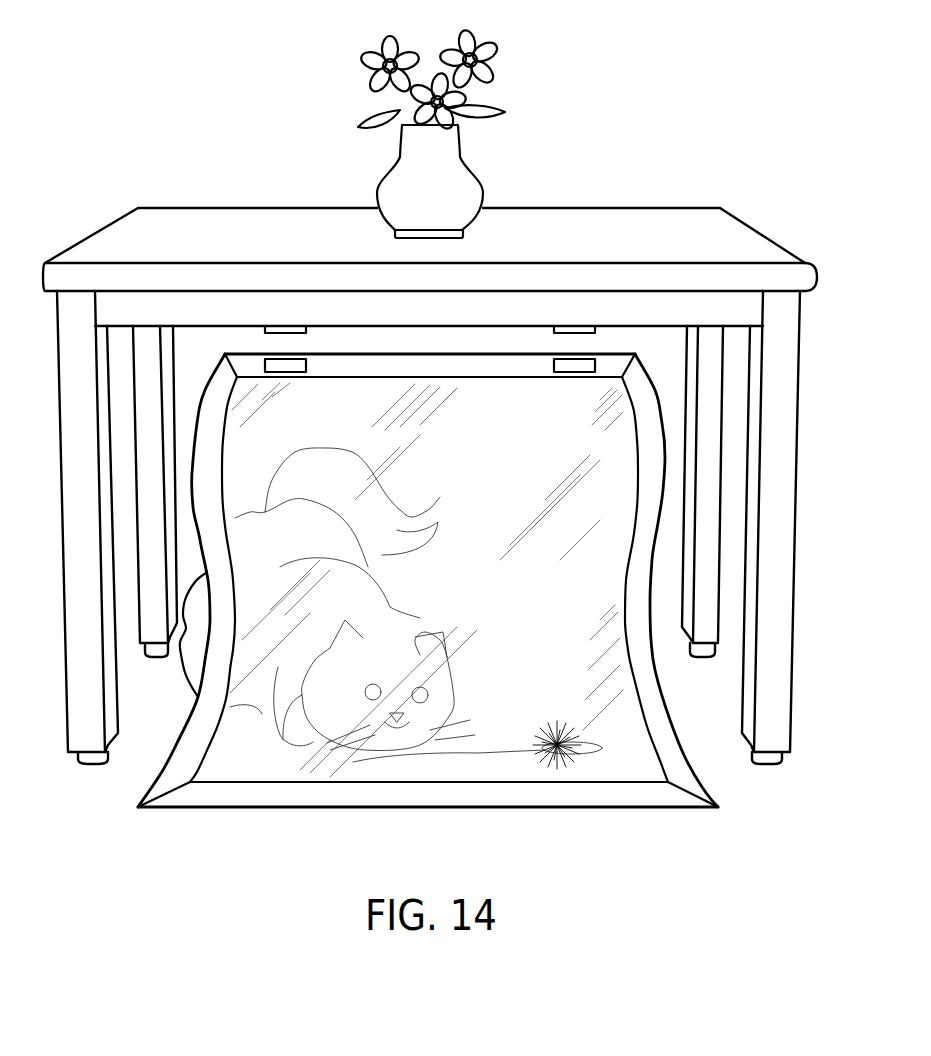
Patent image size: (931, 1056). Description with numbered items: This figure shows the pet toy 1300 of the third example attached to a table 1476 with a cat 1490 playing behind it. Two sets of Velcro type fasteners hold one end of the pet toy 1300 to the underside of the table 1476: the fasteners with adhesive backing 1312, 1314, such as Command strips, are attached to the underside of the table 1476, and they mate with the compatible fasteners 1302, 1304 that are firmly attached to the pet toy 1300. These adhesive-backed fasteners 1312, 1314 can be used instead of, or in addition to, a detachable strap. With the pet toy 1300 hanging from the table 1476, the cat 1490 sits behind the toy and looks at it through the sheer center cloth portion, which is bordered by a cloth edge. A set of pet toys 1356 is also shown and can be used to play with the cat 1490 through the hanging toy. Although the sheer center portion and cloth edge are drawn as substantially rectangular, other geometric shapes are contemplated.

The table 1476 is at (758, 246).
The Velcro type fastener with adhesive backing 1314 is at (283, 328).
The Velcro type fastener with adhesive backing 1312 is at (577, 328).
The Velcro type fastener 1304 is at (293, 372).
The Velcro type fastener 1302 is at (566, 372).
The pet toy 1300 is at (247, 810).
The cat 1490 is at (400, 622).
The pet toys 1356 is at (567, 775).